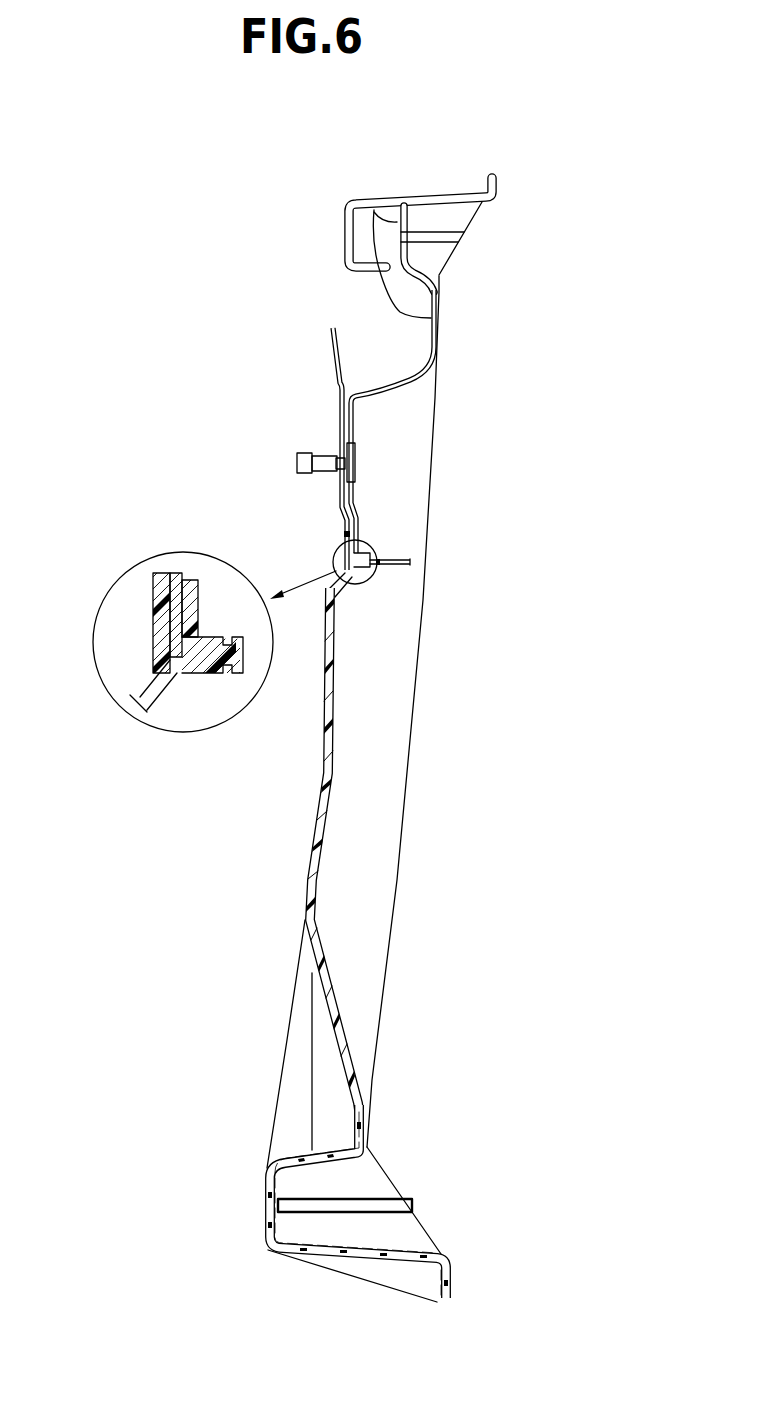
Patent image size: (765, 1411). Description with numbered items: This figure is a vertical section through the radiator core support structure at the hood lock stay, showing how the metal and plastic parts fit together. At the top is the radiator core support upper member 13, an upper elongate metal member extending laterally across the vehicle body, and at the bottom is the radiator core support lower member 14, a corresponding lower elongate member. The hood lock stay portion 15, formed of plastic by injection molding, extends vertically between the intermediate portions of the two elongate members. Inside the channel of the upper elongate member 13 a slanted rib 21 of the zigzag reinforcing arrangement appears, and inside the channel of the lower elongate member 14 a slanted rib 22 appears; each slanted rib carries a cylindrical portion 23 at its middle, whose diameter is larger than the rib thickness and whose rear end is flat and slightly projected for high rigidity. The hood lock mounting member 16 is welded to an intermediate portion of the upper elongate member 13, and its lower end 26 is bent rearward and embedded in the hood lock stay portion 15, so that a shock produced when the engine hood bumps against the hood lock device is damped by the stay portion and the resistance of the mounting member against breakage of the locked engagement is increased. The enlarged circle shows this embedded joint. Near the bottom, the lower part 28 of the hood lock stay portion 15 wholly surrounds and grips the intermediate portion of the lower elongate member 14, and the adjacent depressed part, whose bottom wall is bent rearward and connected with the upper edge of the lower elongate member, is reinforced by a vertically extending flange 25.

The radiator core support upper member 13 is at (397, 222).
The radiator core support lower member 14 is at (357, 1257).
The hood lock stay portion 15 is at (323, 770).
The hood lock mounting member 16 is at (377, 383).
The slanted rib 21 is at (450, 222).
The slanted rib 22 is at (387, 1173).
The cylindrical portion 23 is at (438, 237).
The flange 25 is at (290, 1048).
The lower end 26 is at (200, 657).
The lower part 28 is at (320, 1150).